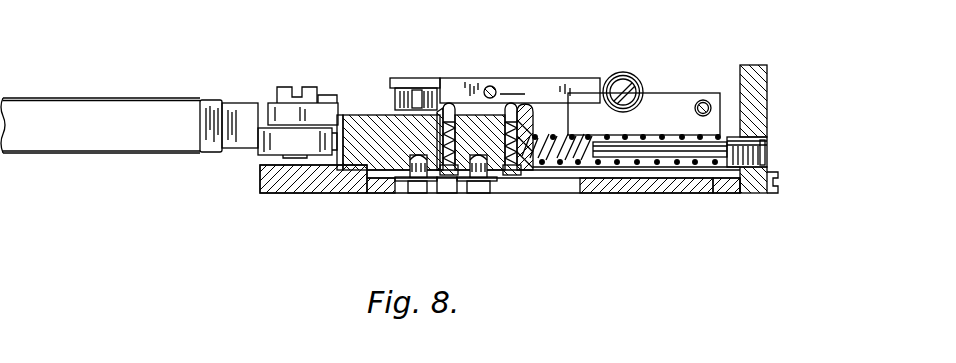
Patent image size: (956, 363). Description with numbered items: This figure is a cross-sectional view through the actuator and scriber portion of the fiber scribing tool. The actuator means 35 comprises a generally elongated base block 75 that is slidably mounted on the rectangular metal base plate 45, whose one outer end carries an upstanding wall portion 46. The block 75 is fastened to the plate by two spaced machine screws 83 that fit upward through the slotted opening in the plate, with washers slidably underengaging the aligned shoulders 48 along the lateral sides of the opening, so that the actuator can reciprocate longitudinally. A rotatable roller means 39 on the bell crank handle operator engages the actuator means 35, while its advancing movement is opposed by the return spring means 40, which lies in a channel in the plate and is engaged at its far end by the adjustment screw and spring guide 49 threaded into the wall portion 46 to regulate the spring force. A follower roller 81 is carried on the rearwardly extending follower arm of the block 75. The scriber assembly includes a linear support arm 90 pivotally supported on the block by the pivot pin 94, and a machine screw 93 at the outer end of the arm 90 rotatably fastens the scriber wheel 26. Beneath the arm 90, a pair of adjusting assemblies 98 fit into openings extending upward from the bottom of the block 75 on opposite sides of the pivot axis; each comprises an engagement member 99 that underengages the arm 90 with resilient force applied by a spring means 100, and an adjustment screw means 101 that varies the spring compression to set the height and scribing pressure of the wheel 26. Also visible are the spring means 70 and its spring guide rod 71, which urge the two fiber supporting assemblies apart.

The actuator means 35 is at (158, 97).
The roller means 39 is at (258, 160).
The base plate 45 is at (317, 195).
The return spring means 40 is at (654, 194).
The adjustment screw and spring guide 49 is at (715, 168).
The upstanding wall portion 46 is at (767, 72).
The shoulders 48 is at (770, 150).
The spring means 70 is at (712, 92).
The spring guide rod 71 is at (695, 100).
The support arm 90 is at (596, 77).
The follower roller 81 is at (390, 95).
The base block 75 is at (343, 113).
The machine screws 83 is at (418, 194).
The adjustment screw means 101 is at (449, 194).
The engagement member 99 is at (452, 103).
The spring means 100 is at (440, 172).
The pivot pin 94 is at (491, 86).
The adjusting assemblies 98 is at (436, 120).
The machine screw 93 is at (620, 72).
The scriber wheel 26 is at (638, 92).